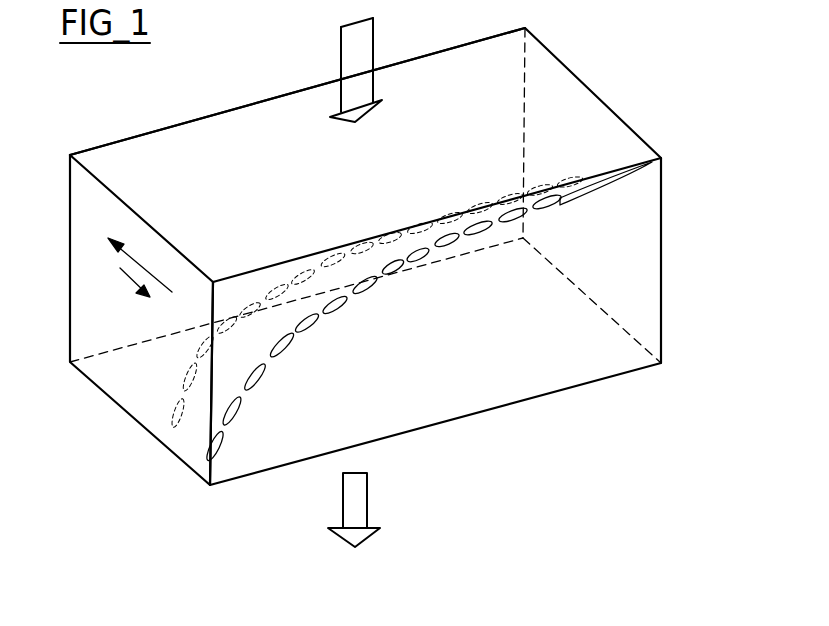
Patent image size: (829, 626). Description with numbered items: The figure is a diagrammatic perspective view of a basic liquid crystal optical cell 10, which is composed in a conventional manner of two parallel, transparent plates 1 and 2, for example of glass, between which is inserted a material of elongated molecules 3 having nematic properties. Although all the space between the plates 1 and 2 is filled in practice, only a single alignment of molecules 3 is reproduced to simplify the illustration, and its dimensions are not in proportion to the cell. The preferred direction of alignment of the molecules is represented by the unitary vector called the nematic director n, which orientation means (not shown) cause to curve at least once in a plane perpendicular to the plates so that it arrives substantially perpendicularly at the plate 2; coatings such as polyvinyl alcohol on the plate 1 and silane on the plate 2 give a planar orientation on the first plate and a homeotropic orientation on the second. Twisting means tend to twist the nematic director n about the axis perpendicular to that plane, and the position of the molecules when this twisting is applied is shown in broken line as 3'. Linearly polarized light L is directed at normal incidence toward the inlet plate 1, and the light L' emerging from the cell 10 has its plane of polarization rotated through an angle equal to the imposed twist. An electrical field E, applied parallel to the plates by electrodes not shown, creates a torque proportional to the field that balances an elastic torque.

The optical cell 10 is at (385, 256).
The first plate 1 is at (379, 169).
The second plate 2 is at (421, 346).
The elongated molecules 3 is at (467, 285).
The twisted molecules position 3' is at (377, 302).
The nematic director n is at (245, 398).
The incident light L is at (367, 62).
The transmitted light L' is at (366, 509).
The electrical field E is at (140, 277).